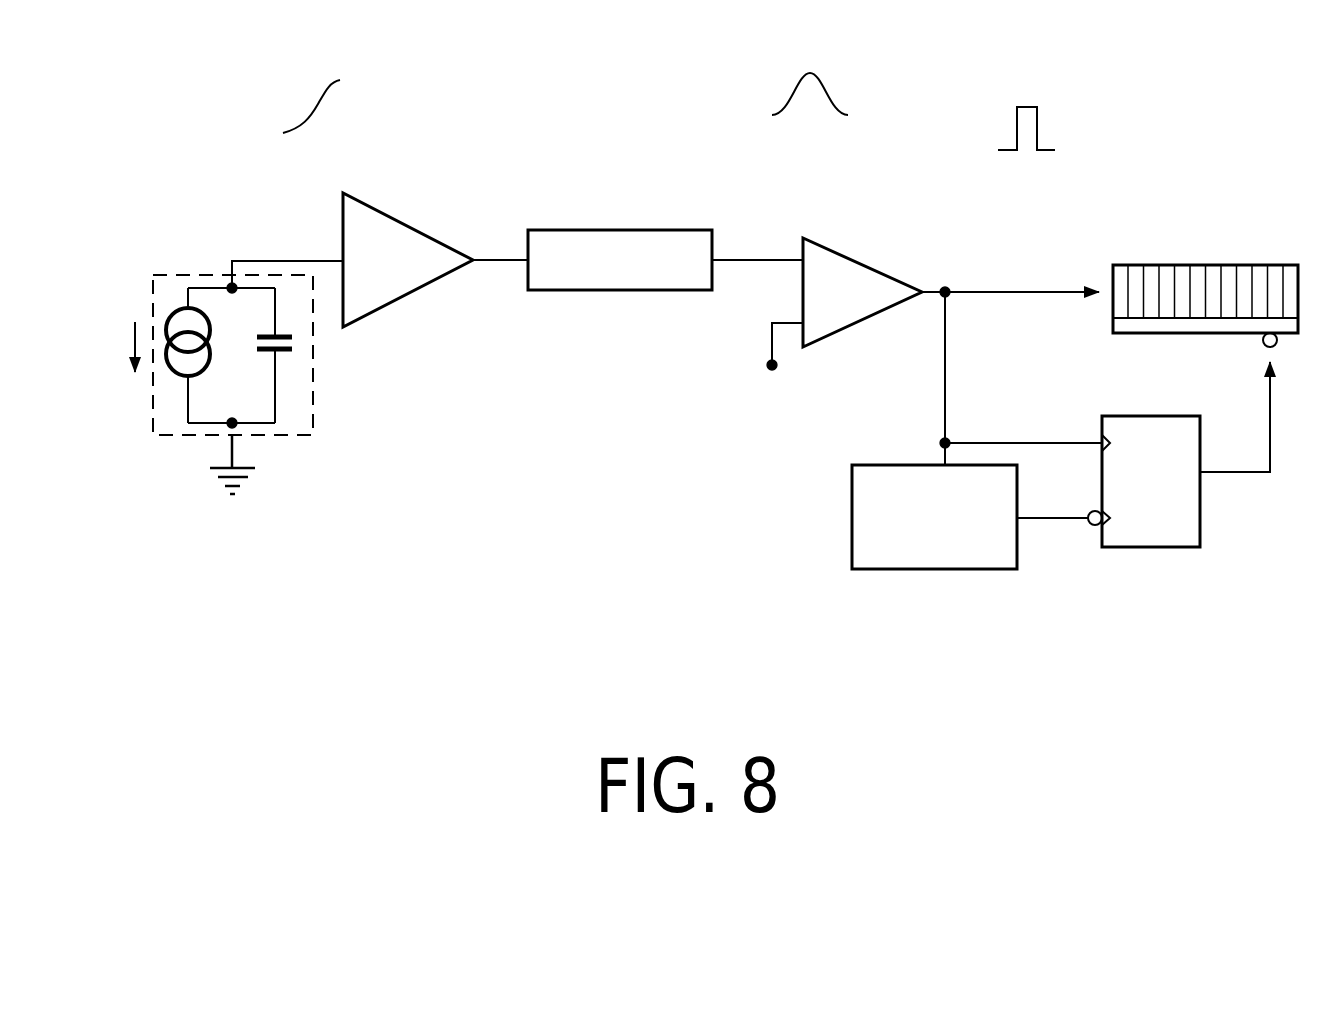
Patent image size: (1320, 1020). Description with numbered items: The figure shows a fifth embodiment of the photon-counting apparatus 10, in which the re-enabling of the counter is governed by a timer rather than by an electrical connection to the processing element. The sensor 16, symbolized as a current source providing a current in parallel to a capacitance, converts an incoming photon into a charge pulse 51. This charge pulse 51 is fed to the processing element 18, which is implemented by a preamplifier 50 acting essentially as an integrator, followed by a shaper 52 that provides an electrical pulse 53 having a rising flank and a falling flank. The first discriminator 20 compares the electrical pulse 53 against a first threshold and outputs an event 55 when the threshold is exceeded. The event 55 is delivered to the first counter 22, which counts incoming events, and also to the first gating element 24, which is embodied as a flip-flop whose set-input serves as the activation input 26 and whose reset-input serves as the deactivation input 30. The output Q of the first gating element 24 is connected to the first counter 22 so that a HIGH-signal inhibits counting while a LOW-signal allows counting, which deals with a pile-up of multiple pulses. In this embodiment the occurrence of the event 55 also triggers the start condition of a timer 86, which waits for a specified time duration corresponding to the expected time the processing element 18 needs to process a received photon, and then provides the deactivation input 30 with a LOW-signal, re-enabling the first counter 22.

The apparatus 10 is at (298, 610).
The sensor 16 is at (204, 166).
The processing element 18 is at (504, 118).
The first discriminator 20 is at (820, 301).
The first counter 22 is at (1214, 265).
The first gating element 24 is at (1200, 513).
The activation input 26 is at (1106, 436).
The deactivation input 30 is at (1105, 536).
The preamplifier 50 is at (367, 277).
The charge pulse 51 is at (283, 211).
The shaper 52 is at (600, 277).
The electrical pulse 53 is at (785, 198).
The event 55 is at (990, 229).
The timer 86 is at (935, 569).